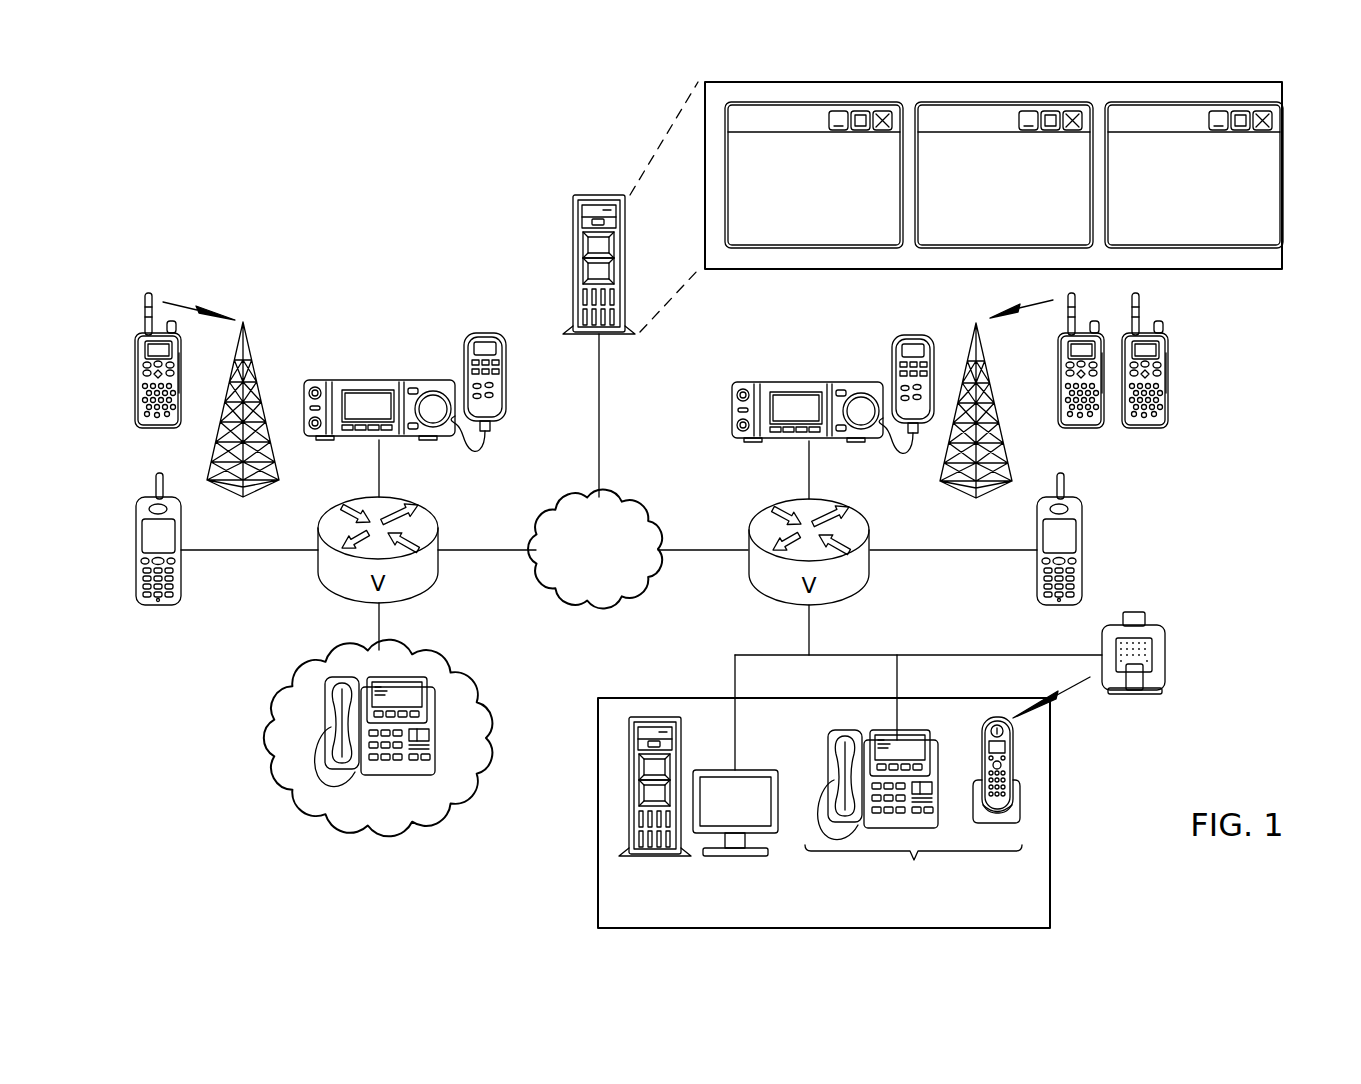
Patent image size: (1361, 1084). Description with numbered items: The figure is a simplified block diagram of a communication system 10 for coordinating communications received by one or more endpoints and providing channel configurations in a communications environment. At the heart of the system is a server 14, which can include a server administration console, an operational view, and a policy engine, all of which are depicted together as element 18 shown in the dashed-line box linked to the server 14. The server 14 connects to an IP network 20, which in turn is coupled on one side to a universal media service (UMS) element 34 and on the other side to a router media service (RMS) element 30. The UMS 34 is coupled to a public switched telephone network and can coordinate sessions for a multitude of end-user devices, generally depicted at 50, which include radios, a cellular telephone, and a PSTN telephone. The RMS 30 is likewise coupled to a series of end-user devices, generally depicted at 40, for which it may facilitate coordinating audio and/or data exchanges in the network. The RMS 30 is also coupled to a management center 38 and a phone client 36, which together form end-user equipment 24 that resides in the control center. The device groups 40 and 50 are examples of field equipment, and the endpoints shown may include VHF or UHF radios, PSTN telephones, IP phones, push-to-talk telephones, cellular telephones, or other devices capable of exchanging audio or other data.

The communication system 10 is at (322, 168).
The server 14 is at (573, 263).
The server administration console, operational view, and policy engine 18 is at (1290, 169).
The IP network 20 is at (577, 610).
The end-user equipment 24 is at (789, 813).
The router media service (RMS) element 30 is at (870, 566).
The universal media service (UMS) element 34 is at (318, 566).
The phone client 36 is at (913, 816).
The management center 38 is at (755, 770).
The end-user devices 40 is at (1152, 487).
The end-user devices 50 is at (213, 652).